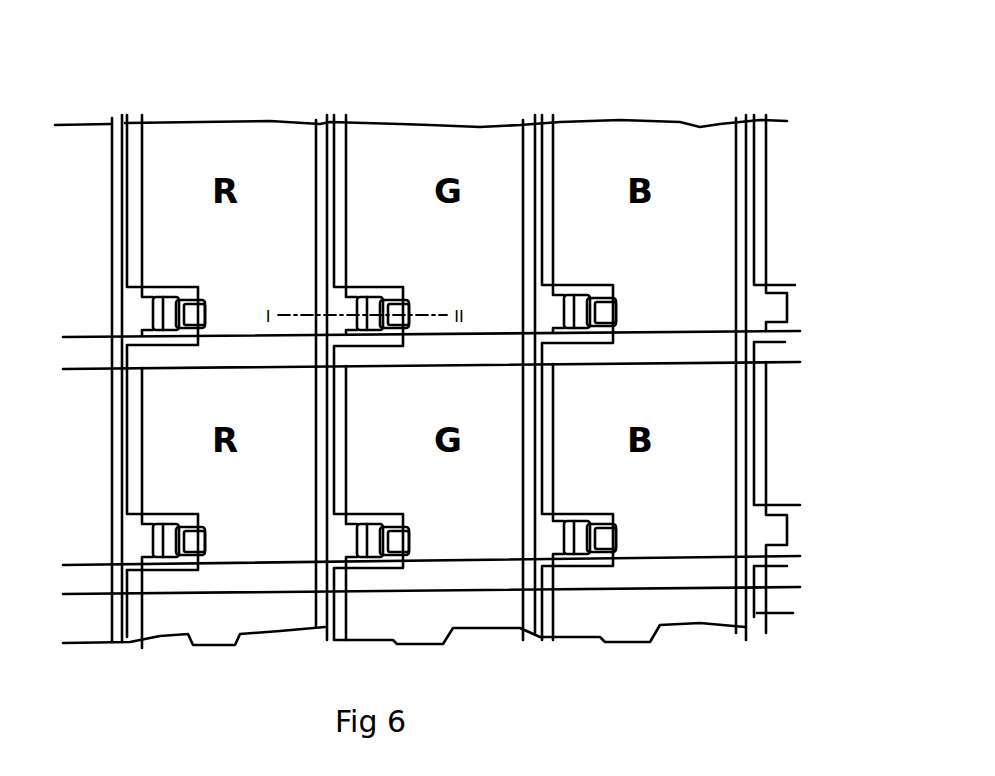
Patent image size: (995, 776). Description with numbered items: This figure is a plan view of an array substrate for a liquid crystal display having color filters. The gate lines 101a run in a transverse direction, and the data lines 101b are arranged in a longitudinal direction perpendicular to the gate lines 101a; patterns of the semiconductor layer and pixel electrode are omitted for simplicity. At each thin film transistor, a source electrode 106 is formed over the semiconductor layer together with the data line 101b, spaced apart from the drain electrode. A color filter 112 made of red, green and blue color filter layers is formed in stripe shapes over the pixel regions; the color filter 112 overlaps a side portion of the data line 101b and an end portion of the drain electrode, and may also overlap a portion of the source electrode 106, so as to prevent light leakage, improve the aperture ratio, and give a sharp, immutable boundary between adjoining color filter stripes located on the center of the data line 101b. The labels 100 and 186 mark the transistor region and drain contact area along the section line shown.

The color filter 112 is at (200, 118).
The gate lines 101a is at (95, 575).
The data lines 101b is at (323, 632).
The thin film transistor (208) 100 is at (372, 298).
The source electrode 106 is at (557, 540).
The drain electrode (218) 186 is at (607, 540).